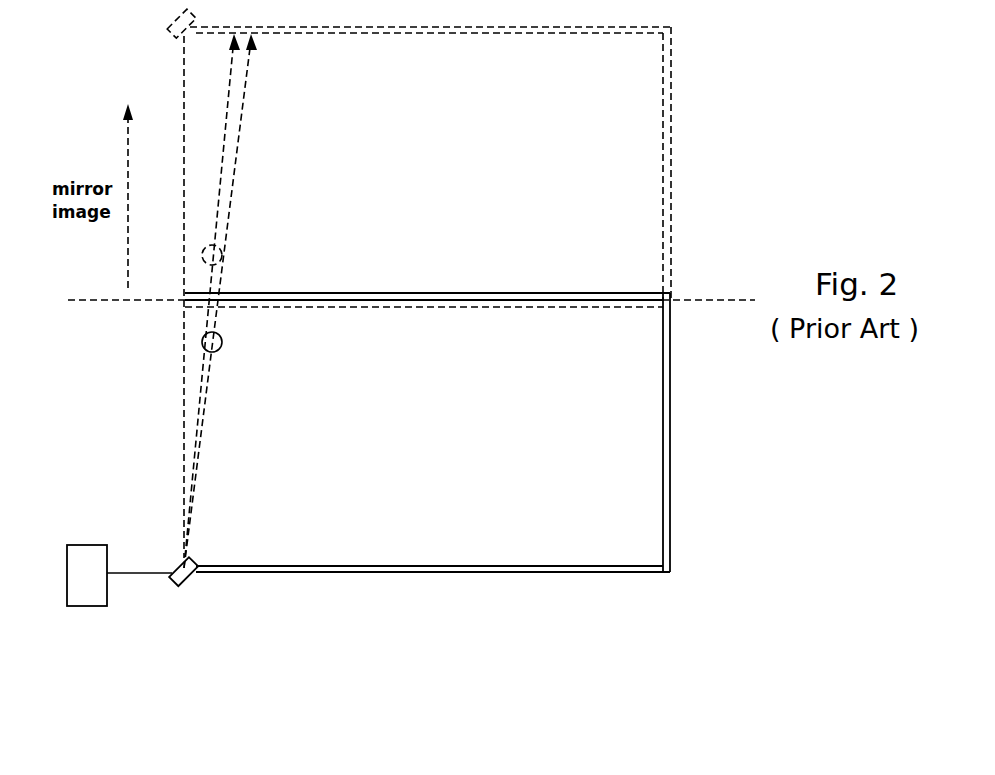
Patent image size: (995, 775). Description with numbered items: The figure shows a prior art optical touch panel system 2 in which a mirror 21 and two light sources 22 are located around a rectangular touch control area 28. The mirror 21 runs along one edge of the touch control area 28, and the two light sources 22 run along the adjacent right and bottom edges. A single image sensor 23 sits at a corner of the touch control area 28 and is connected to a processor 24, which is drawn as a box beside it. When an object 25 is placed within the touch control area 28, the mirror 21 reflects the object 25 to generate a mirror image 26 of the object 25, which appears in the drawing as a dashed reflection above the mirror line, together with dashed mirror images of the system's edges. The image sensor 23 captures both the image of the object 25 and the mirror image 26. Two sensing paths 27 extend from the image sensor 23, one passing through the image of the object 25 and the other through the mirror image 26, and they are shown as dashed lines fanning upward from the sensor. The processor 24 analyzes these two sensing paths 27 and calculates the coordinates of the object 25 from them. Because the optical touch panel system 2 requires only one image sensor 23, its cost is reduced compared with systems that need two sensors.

The optical touch panel system 2 is at (718, 247).
The mirror 21 is at (612, 293).
The light sources 22 is at (645, 568).
The image sensor 23 is at (180, 585).
The processor 24 is at (88, 545).
The object 25 is at (203, 343).
The mirror image 26 is at (206, 262).
The sensing paths 27 is at (200, 393).
The touch control area 28 is at (409, 522).